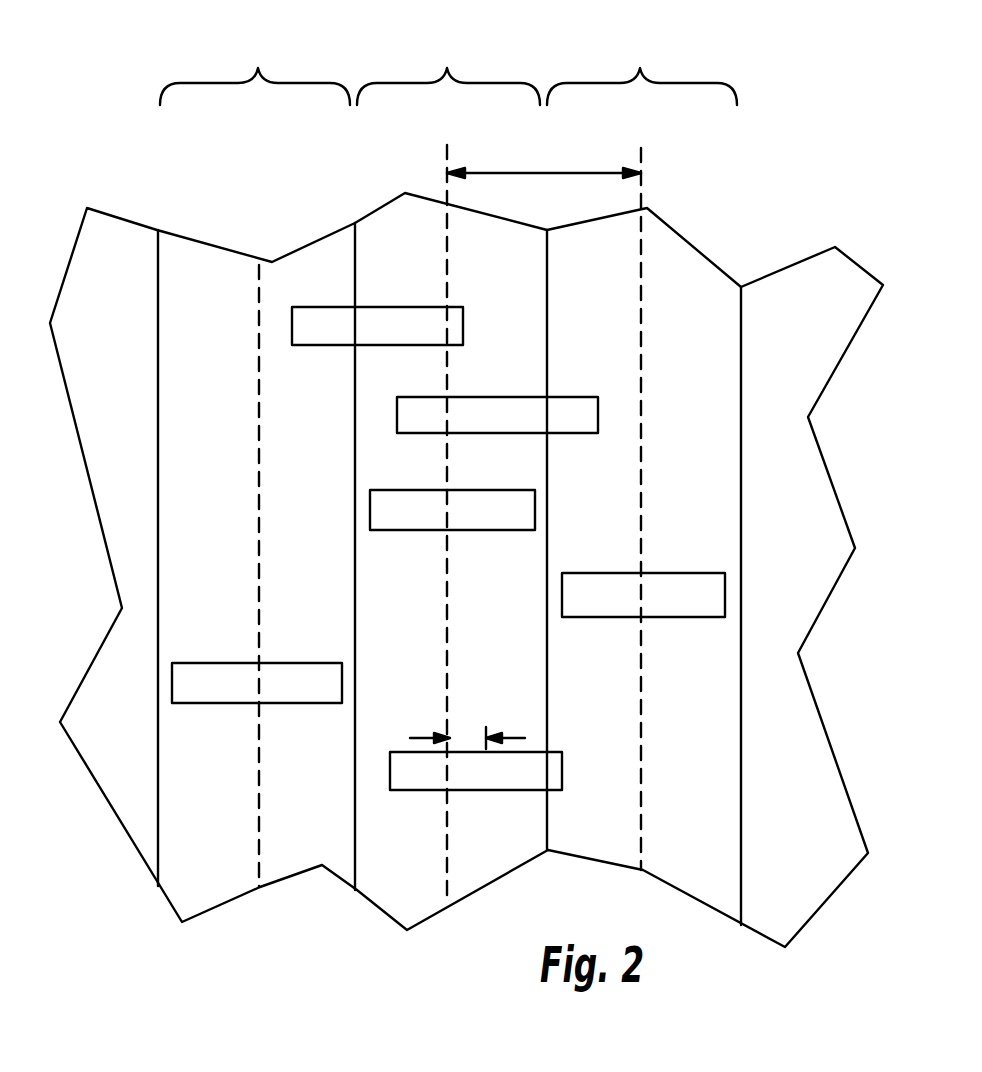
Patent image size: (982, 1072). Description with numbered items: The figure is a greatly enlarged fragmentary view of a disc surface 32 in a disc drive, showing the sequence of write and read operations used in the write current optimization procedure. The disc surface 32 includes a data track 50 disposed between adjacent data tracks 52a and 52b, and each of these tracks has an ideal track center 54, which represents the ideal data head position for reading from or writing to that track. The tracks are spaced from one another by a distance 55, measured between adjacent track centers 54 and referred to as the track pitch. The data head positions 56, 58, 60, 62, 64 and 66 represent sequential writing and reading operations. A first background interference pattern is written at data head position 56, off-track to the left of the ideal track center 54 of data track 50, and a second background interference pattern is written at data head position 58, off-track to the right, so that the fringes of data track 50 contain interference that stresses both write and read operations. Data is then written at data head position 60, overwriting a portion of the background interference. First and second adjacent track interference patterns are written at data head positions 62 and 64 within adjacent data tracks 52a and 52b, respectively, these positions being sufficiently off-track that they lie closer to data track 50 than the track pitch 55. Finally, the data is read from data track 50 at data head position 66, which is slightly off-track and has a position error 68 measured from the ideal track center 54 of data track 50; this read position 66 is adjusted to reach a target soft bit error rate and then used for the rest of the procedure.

The disc surface 32 is at (123, 810).
The data track 50 is at (448, 66).
The adjacent data track 52a is at (642, 66).
The adjacent data track 52b is at (255, 66).
The ideal track center 54 is at (257, 290).
The distance (track pitch) 55 is at (513, 172).
The data head position 56 is at (463, 321).
The data head position 58 is at (598, 405).
The data head position 60 is at (535, 511).
The data head position 62 is at (657, 573).
The data head position 64 is at (342, 686).
The data head position (read position) 66 is at (562, 768).
The position error 68 is at (513, 733).